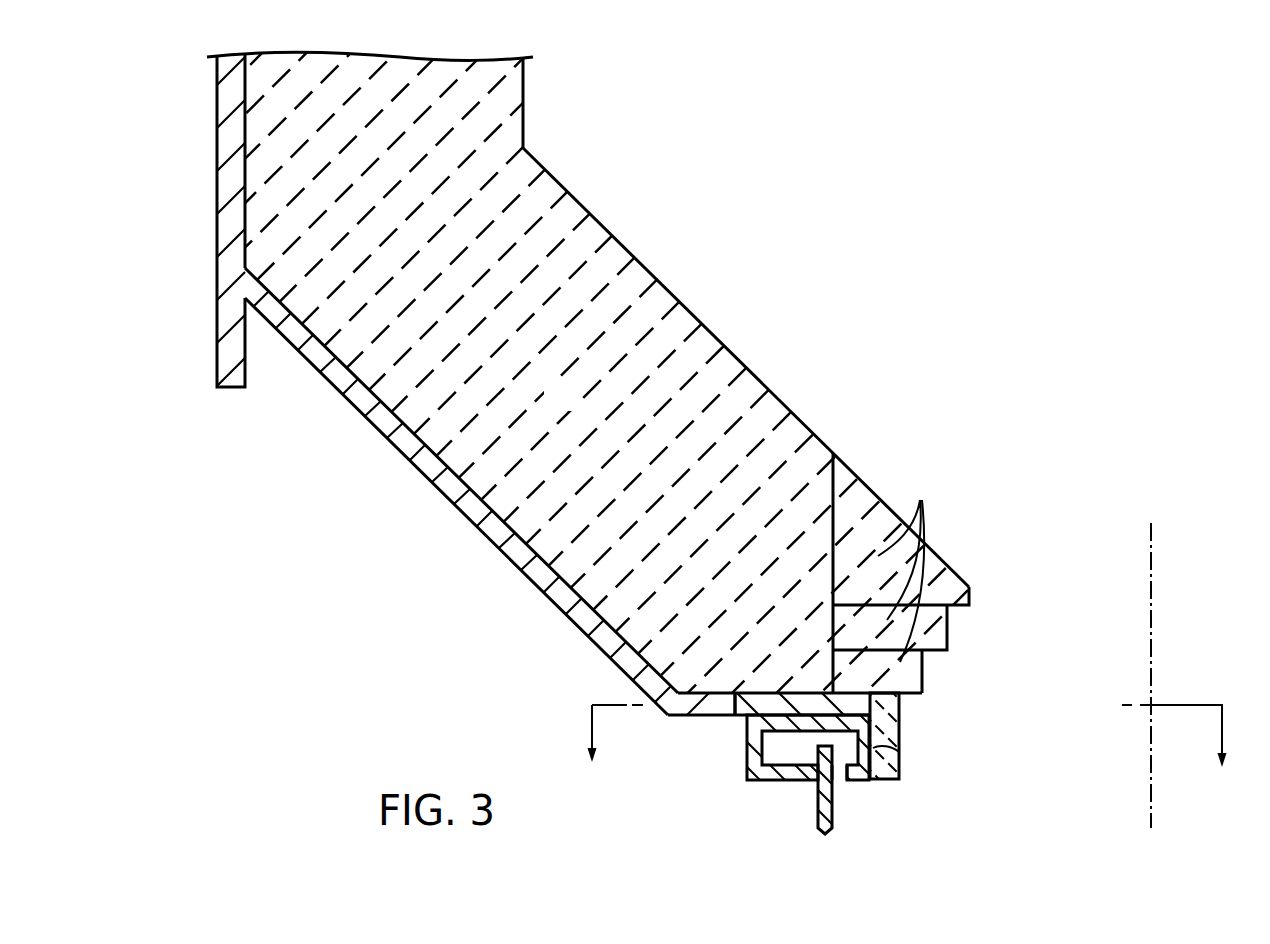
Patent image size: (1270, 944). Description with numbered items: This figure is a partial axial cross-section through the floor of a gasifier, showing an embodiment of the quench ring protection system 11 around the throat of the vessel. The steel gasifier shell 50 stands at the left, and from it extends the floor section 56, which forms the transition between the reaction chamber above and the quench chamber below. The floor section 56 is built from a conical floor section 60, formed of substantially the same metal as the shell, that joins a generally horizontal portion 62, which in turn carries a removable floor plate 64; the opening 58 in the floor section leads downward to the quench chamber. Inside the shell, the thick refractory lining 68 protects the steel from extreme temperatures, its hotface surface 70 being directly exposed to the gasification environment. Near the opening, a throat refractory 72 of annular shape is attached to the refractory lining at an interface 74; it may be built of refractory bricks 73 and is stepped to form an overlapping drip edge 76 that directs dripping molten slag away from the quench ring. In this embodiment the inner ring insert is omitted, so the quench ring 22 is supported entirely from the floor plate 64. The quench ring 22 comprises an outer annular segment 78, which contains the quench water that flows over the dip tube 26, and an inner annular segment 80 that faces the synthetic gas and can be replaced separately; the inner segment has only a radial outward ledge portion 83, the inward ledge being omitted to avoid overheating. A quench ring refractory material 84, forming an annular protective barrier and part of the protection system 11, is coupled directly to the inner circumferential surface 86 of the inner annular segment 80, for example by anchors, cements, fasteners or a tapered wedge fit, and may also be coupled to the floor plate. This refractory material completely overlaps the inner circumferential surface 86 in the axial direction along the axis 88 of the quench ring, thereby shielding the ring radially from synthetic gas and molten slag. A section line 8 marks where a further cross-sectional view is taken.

The section line 8- 8 is at (907, 744).
The quench ring protection system 11 is at (890, 756).
The quench ring 22 is at (805, 759).
The dip tube 26 is at (818, 804).
The gasifier shell 50 is at (217, 222).
The floor section 56 is at (557, 524).
The opening 58 is at (934, 579).
The conical floor section 60 is at (556, 604).
The horizontal portion 62 is at (709, 717).
The removable floor plate 64 is at (746, 690).
The refractory lining 68 is at (577, 407).
The hotface surface 70 is at (664, 284).
The throat refractory 72 is at (956, 544).
The refractory bricks 73 is at (906, 568).
The interface 74 is at (832, 470).
The overlapping drip edge 76 is at (963, 637).
The outer annular segment 78 is at (783, 781).
The inner annular segment 80 is at (865, 781).
The radial outward ledge portion 83 is at (843, 782).
The quench ring refractory material 84 is at (900, 727).
The inner circumferential surface 86 is at (873, 748).
The axis 88 is at (1153, 623).